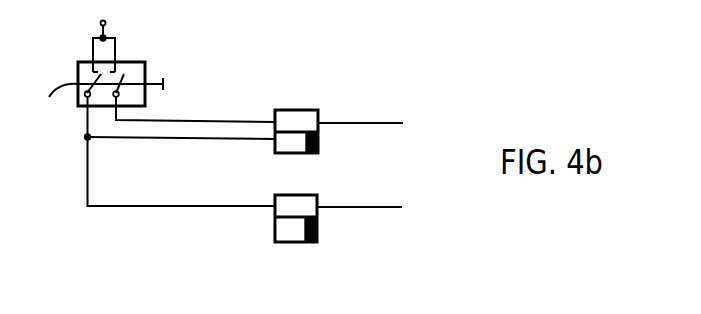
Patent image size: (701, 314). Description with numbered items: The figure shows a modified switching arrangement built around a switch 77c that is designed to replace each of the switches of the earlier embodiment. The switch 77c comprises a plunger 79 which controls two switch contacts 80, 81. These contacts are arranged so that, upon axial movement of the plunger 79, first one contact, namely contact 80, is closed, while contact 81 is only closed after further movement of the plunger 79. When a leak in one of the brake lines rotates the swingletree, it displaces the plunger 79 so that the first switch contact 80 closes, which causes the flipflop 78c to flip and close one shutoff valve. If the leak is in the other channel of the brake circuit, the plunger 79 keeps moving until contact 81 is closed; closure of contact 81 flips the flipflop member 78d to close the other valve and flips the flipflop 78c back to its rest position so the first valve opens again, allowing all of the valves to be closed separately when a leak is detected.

The switch 77c is at (143, 61).
The flipflop 78c is at (300, 120).
The flipflop member 78d is at (292, 228).
The plunger 79 is at (158, 78).
The switch contact 80 is at (140, 88).
The switch contact 81 is at (156, 145).